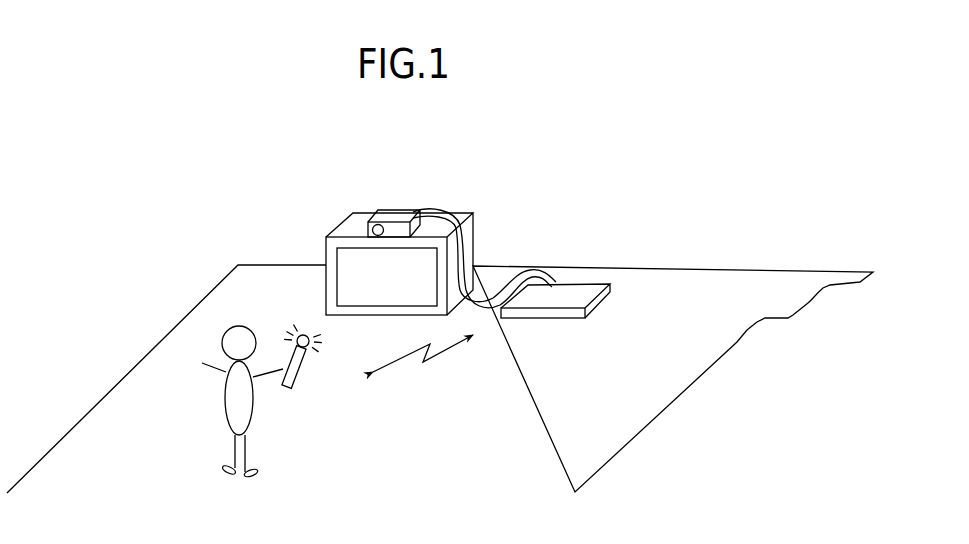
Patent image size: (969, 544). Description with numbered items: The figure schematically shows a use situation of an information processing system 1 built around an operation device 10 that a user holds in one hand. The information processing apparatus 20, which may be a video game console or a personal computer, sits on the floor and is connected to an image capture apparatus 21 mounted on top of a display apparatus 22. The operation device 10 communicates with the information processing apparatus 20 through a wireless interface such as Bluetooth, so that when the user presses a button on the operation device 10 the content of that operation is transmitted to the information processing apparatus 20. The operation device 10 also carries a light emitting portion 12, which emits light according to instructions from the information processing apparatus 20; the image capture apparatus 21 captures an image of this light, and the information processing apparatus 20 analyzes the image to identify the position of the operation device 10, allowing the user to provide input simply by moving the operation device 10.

The information processing system 1 is at (625, 255).
The operation device 10 is at (298, 375).
The light emitting portion 12 is at (303, 334).
The information processing apparatus 20 is at (560, 318).
The image capture apparatus 21 is at (398, 212).
The display apparatus 22 is at (326, 240).